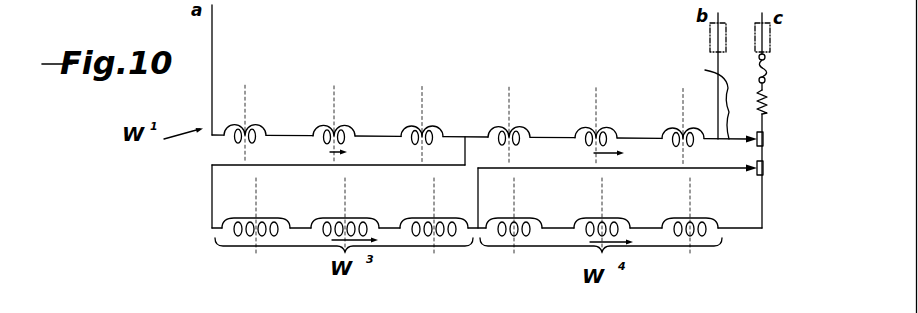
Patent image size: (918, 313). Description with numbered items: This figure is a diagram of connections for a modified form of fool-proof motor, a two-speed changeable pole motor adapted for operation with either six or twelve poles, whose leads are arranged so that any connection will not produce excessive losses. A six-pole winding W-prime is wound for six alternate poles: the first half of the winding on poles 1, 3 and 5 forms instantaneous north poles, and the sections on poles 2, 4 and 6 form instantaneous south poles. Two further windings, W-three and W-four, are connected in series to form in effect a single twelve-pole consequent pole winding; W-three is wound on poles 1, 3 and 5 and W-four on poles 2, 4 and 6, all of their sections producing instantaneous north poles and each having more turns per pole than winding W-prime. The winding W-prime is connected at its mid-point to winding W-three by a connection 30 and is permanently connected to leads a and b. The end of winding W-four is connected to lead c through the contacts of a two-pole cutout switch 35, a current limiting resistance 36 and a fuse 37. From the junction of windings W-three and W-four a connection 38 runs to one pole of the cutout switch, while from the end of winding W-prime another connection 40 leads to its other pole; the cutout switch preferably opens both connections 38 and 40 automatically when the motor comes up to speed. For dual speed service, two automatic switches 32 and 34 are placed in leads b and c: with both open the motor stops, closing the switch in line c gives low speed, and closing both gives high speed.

The pole 1 is at (256, 169).
The pole 2 is at (514, 170).
The pole 3 is at (345, 169).
The pole 4 is at (602, 170).
The pole 5 is at (434, 170).
The pole 6 is at (690, 171).
The connection 30 is at (345, 165).
The automatic switch 32 is at (710, 43).
The automatic switch 34 is at (770, 42).
The two-pole cutout switch 35 is at (763, 143).
The current limiting resistance 36 is at (772, 101).
The fuse 37 is at (768, 68).
The connection 38 is at (548, 168).
The connection 40 is at (705, 70).